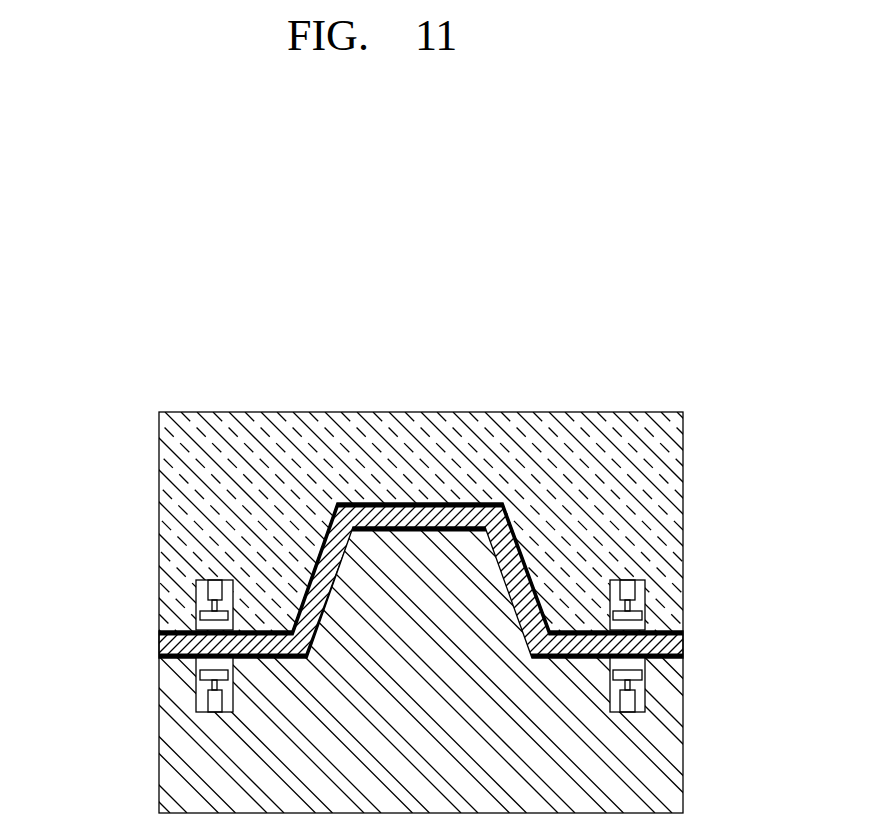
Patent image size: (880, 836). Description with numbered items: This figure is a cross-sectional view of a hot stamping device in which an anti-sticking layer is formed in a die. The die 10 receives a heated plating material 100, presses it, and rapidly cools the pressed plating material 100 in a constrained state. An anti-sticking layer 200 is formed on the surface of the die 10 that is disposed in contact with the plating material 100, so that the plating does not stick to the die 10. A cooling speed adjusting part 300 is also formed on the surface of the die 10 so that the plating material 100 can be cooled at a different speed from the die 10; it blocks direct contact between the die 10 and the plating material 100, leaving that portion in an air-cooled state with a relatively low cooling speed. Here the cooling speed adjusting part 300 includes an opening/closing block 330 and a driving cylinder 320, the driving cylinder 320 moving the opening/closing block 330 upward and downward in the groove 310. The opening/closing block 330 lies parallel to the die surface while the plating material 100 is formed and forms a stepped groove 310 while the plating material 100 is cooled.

The die 10 is at (673, 498).
The plating material 100 is at (683, 646).
The anti-sticking layer 200 is at (652, 634).
The cooling speed adjusting part 300 is at (405, 578).
The groove 310 is at (200, 579).
The driving cylinder 320 is at (210, 602).
The opening/closing block 330 is at (200, 613).